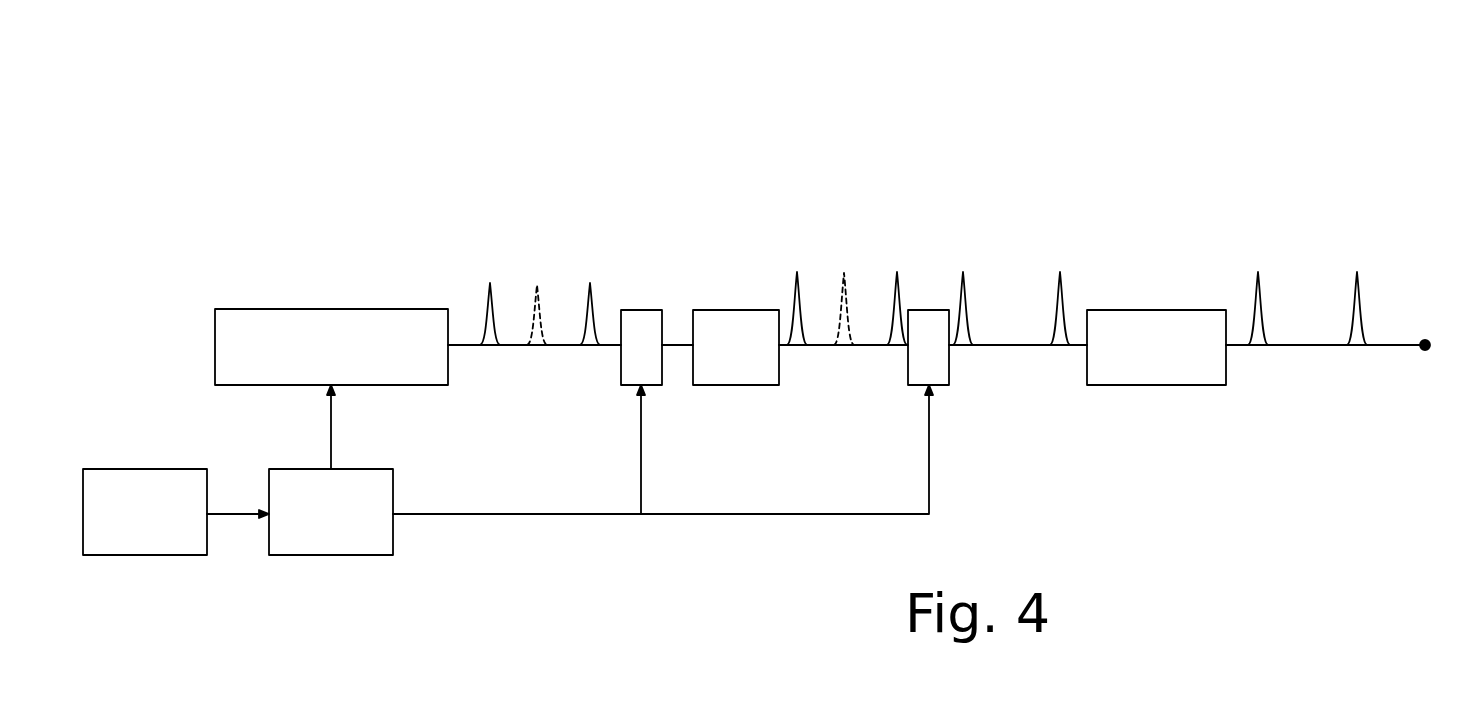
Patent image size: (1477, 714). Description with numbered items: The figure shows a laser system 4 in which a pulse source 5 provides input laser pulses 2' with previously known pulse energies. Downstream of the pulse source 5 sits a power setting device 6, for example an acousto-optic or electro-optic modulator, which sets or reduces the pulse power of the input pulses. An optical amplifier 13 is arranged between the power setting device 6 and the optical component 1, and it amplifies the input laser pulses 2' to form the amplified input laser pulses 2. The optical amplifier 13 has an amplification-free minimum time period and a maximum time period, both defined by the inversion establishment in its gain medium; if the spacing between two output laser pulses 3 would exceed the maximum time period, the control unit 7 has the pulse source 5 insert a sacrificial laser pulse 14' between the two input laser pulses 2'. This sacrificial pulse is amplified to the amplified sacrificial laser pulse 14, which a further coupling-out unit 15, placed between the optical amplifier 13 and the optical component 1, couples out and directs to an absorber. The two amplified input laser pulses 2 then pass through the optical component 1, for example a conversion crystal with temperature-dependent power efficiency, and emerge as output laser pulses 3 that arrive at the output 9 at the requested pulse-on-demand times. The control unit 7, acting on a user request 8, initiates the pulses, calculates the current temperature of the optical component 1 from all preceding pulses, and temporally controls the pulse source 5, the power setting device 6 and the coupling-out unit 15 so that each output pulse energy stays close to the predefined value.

The optical component 1 is at (1166, 363).
The input laser pulses 2 is at (927, 269).
The input laser pulses 2' is at (543, 275).
The output laser pulses 3 is at (1258, 272).
The laser system 4 is at (769, 303).
The pulse source 5 is at (344, 363).
The power setting device 6 is at (656, 363).
The control unit 7 is at (318, 528).
The user request 8 is at (132, 528).
The output 9 is at (1428, 338).
The optical amplifier 13 is at (716, 363).
The amplified sacrificial laser pulse 14 is at (839, 269).
The sacrificial laser pulse 14' is at (535, 275).
The coupling-out unit 15 is at (910, 363).